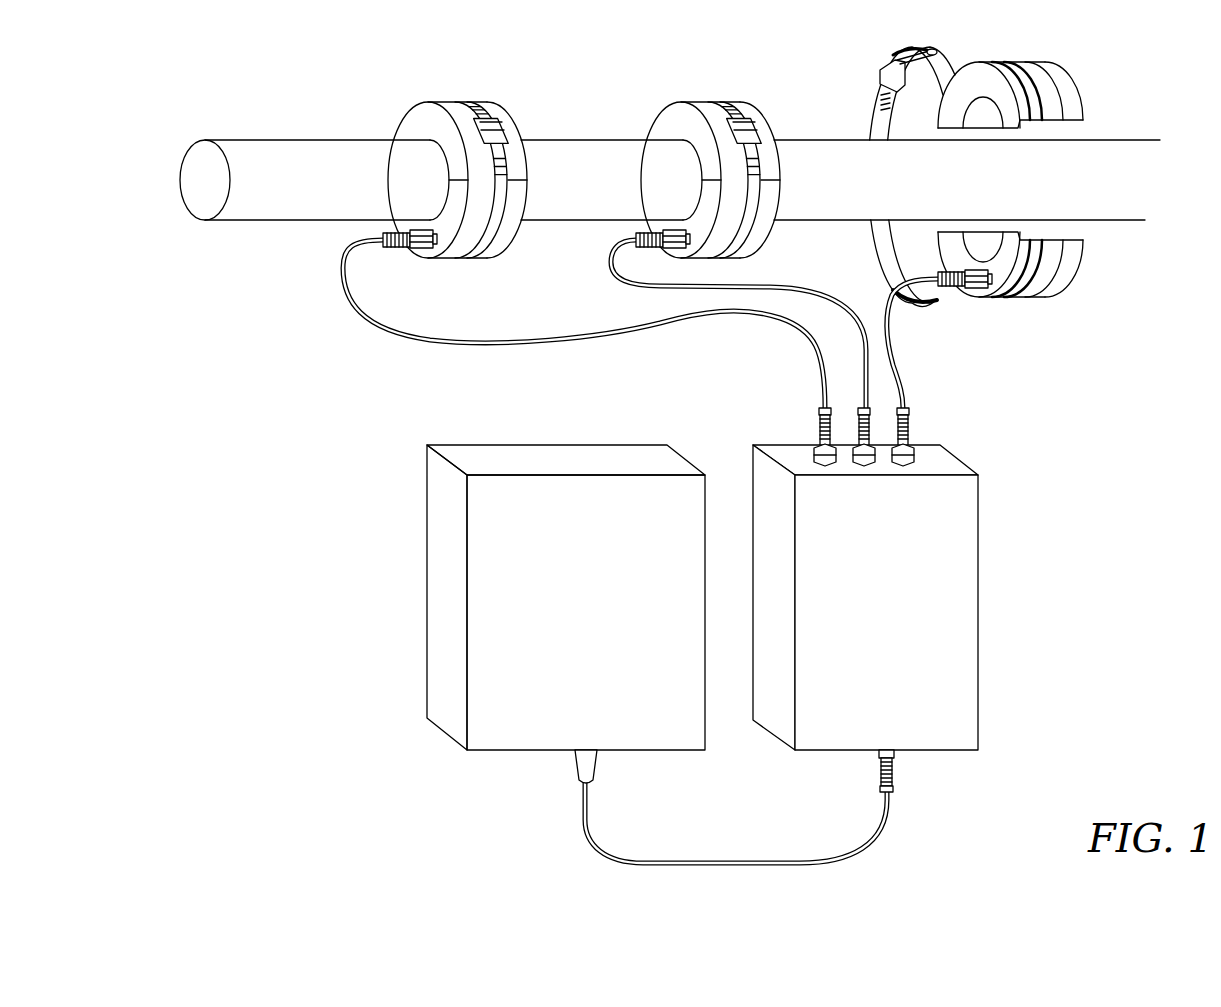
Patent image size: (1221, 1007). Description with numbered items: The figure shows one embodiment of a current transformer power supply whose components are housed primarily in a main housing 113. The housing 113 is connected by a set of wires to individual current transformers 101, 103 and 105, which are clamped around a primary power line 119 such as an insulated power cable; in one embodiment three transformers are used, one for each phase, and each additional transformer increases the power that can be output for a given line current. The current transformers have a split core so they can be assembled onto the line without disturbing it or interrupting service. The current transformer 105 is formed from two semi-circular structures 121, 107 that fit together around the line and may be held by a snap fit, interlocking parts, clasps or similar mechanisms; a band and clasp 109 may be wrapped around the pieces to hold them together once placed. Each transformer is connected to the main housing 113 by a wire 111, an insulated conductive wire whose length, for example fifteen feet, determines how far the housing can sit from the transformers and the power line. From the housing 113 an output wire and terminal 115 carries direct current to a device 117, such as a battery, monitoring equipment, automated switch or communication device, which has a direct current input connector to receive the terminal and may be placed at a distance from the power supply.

The current transformer 101 is at (470, 102).
The current transformer 103 is at (728, 102).
The current transformer 105 is at (1055, 77).
The semi-circular structure 107 is at (1040, 300).
The band and clasp 109 is at (920, 50).
The wire 111 is at (905, 363).
The housing 113 is at (978, 565).
The output wire and terminal 115 is at (893, 812).
The device 117 is at (663, 750).
The power conductor / pipe 119 is at (313, 160).
The semi-circular structure 121 is at (1092, 100).